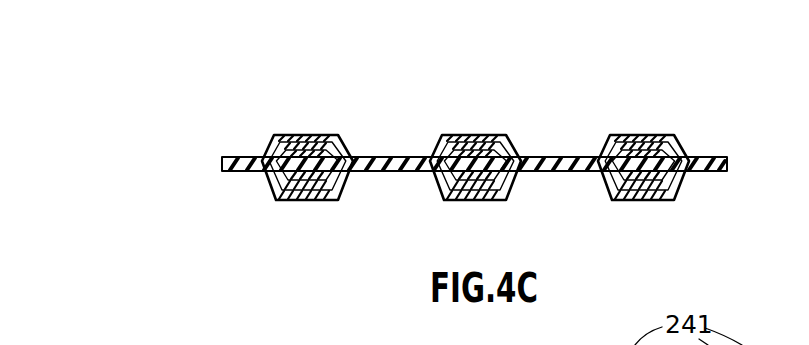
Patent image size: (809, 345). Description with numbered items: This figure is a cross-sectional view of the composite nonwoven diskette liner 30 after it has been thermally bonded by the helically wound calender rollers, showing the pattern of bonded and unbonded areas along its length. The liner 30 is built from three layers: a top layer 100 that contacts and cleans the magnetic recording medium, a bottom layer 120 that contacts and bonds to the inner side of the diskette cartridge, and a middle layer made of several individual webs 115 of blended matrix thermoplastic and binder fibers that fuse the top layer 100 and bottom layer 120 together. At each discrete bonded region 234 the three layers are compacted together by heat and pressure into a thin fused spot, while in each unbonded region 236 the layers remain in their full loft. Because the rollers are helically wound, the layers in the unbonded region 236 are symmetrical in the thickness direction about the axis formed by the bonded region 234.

The composite liner 30 is at (428, 127).
The bonded region 234 is at (397, 156).
The unbonded region 236 is at (488, 136).
The top layer 100 is at (674, 134).
The individual webs 115 is at (658, 184).
The bottom layer 120 is at (680, 177).